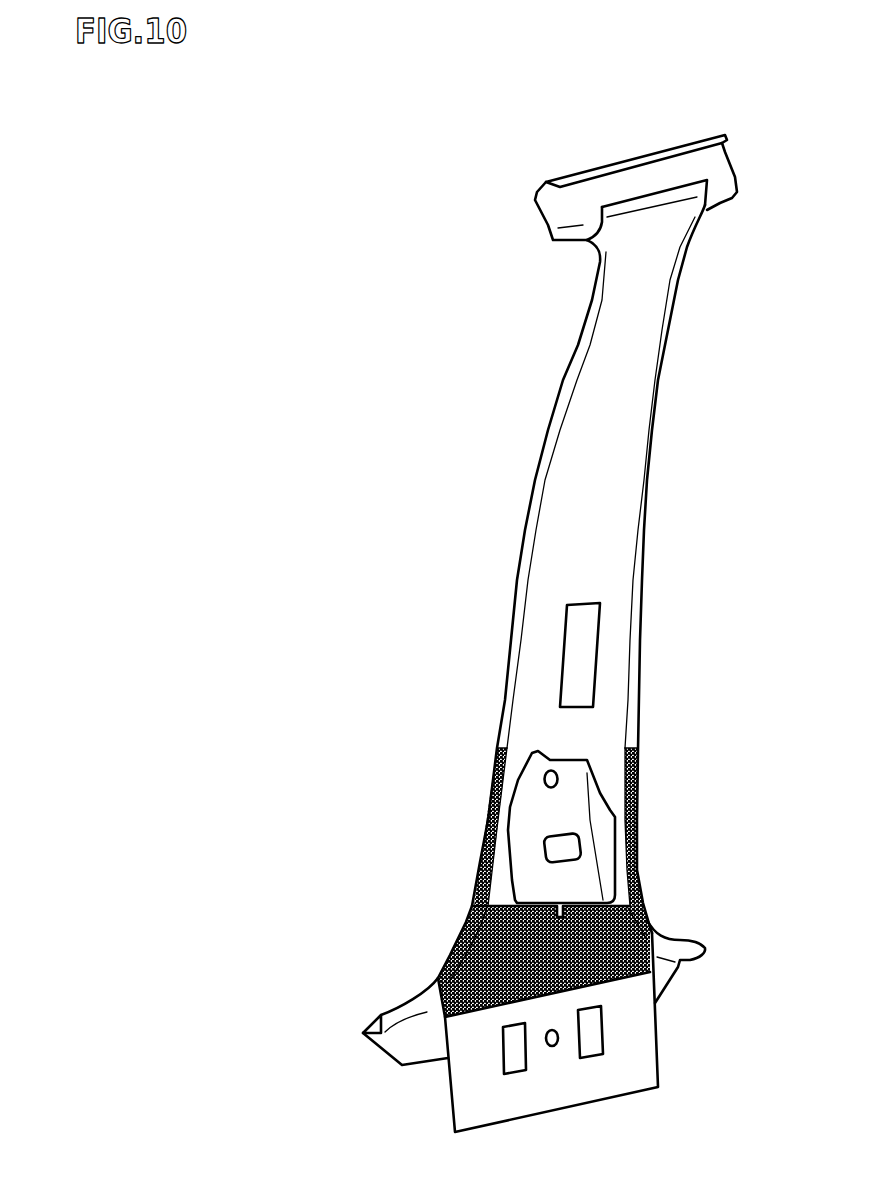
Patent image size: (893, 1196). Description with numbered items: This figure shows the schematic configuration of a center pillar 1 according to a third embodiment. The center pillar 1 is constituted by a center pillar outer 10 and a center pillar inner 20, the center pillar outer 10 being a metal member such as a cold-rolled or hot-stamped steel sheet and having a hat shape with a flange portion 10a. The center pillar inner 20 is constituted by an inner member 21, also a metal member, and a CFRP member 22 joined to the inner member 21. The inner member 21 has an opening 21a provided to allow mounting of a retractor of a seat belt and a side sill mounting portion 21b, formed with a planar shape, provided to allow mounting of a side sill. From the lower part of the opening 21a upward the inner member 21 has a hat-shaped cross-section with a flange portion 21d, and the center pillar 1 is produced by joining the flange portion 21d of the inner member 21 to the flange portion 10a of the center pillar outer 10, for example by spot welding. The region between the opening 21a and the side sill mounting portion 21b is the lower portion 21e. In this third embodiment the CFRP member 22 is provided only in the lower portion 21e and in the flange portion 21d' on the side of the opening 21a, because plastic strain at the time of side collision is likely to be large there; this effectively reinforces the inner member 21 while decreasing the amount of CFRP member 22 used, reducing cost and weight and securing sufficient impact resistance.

The center pillar 1 is at (484, 138).
The center pillar outer 10 is at (586, 172).
The flange portion 10a is at (683, 940).
The center pillar inner 20 is at (663, 481).
The inner member 21 is at (610, 540).
The opening 21a is at (575, 773).
The side sill mounting portion 21b is at (563, 1085).
The flange portion 21d is at (579, 482).
The flange portion on a side of the opening 21d' is at (558, 815).
The lower portion 21e is at (500, 950).
The CFRP member 22 is at (493, 770).